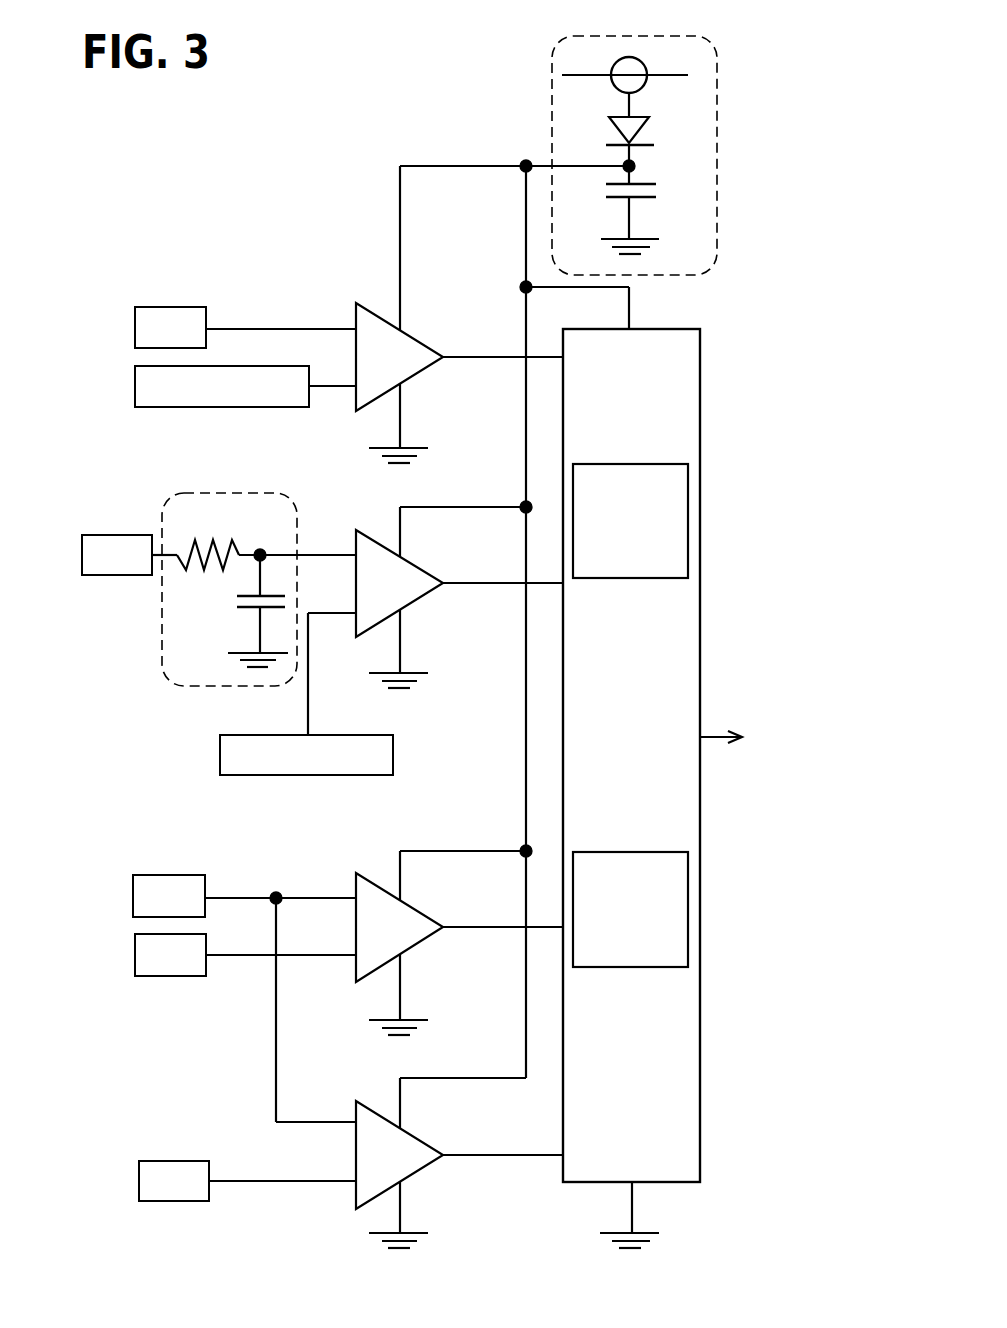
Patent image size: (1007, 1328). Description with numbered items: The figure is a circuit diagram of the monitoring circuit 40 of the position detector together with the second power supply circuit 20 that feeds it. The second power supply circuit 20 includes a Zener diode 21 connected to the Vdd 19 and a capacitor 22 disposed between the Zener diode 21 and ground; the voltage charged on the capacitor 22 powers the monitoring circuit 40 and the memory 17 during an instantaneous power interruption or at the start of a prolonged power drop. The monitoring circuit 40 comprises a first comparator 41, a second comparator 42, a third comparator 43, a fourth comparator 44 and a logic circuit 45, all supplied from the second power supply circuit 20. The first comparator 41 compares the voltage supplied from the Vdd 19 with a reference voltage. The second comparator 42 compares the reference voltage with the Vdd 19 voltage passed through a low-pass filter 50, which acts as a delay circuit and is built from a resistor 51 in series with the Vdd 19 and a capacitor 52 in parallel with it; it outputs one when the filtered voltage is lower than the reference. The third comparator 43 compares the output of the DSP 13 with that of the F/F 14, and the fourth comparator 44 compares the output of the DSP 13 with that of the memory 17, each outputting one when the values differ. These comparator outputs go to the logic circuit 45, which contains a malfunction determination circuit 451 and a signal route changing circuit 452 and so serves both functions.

The monitoring circuit 40 is at (167, 155).
The second power supply circuit 20 is at (717, 118).
The Zener diode 21 is at (647, 125).
The capacitor 22 is at (645, 199).
The Vdd 19 is at (135, 330).
The low-pass filter 50 is at (219, 492).
The resistor 51 is at (209, 545).
The capacitor 52 is at (248, 609).
The first comparator 41 is at (375, 308).
The second comparator 42 is at (375, 534).
The third comparator 43 is at (375, 877).
The fourth comparator 44 is at (375, 1107).
The logic circuit 45 is at (700, 552).
The malfunction determination circuit 451 is at (688, 500).
The signal route changing circuit 452 is at (688, 898).
The DSP 13 is at (133, 898).
The F/F 14 is at (135, 956).
The memory 17 is at (139, 1181).